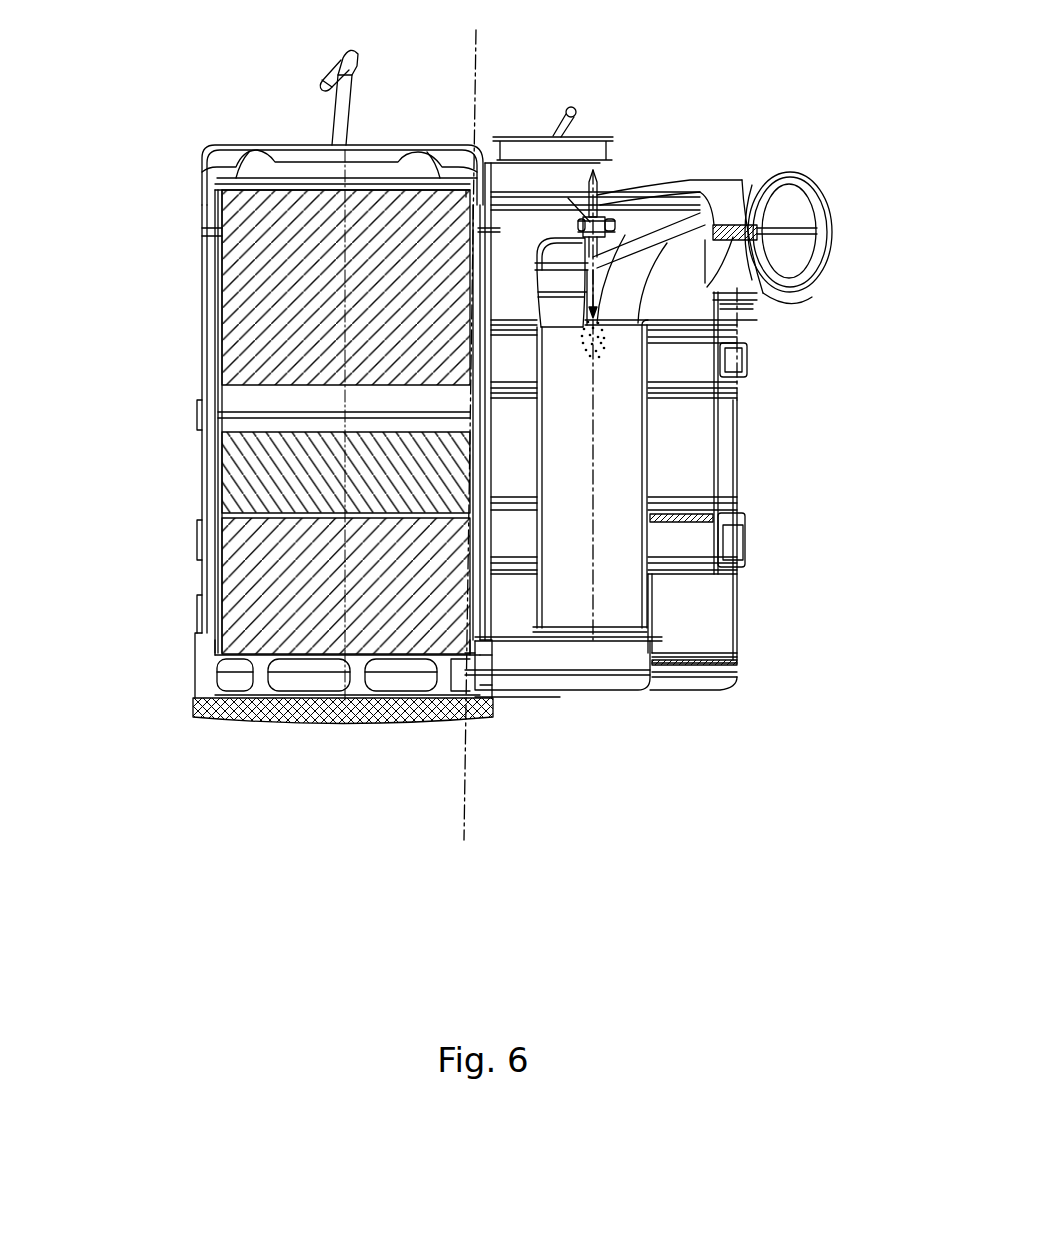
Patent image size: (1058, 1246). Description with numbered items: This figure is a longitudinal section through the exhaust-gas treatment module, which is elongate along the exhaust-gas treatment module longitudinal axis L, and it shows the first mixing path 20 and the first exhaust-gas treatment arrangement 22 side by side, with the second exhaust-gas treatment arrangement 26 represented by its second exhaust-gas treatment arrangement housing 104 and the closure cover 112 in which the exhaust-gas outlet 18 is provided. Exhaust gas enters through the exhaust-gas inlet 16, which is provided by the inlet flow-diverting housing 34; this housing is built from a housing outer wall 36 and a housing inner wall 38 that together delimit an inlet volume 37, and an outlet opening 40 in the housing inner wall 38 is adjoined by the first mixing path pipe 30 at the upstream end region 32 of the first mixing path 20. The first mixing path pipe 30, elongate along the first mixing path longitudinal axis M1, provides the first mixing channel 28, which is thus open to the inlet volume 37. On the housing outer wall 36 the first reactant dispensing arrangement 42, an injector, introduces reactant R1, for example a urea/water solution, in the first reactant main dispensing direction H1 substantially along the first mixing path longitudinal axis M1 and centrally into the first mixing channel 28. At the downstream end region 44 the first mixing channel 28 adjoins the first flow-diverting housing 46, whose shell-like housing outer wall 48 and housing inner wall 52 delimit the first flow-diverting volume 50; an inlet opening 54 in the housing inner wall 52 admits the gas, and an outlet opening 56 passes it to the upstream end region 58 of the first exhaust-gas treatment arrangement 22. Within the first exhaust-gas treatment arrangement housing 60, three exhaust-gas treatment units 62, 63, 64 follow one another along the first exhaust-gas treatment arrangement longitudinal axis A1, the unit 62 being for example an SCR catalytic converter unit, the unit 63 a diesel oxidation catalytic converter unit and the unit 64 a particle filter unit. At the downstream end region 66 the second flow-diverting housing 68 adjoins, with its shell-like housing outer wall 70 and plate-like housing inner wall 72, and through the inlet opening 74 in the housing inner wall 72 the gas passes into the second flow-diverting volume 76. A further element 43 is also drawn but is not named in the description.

The exhaust-gas inlet 16 is at (817, 205).
The exhaust-gas outlet 18 is at (515, 133).
The first mixing path 20 is at (710, 422).
The first exhaust-gas treatment arrangement 22 is at (267, 427).
The second exhaust-gas treatment arrangement 26 is at (765, 667).
The first mixing channel 28 is at (620, 543).
The first mixing path pipe 30 is at (648, 492).
The upstream end region 32 is at (603, 360).
The inlet flow-diverting housing 34 is at (714, 198).
The housing outer wall 36 is at (690, 190).
The inlet volume 37 is at (598, 290).
The housing inner wall 38 is at (717, 310).
The outlet opening 40 is at (747, 345).
The first reactant dispensing arrangement 42 is at (603, 217).
The bottom strip 43 is at (268, 722).
The downstream end region 44 is at (664, 606).
The first flow-diverting housing 46 is at (653, 687).
The housing outer wall 48 is at (547, 693).
The first flow-diverting volume 50 is at (462, 685).
The housing inner wall 52 is at (207, 627).
The inlet opening 54 is at (562, 625).
The outlet opening 56 is at (235, 668).
The upstream end region 58 is at (175, 601).
The first exhaust-gas treatment arrangement housing 60 is at (213, 410).
The exhaust-gas treatment unit 62 is at (240, 547).
The exhaust-gas treatment unit 63 is at (253, 470).
The exhaust-gas treatment unit 64 is at (240, 260).
The downstream end region 66 is at (175, 233).
The second flow-diverting housing 68 is at (230, 143).
The housing outer wall 70 is at (306, 118).
The housing inner wall 72 is at (200, 227).
The inlet opening 74 is at (457, 190).
The second flow-diverting volume 76 is at (365, 158).
The second exhaust-gas treatment arrangement housing 104 is at (738, 628).
The closure cover 112 is at (605, 172).
The first exhaust-gas treatment arrangement longitudinal axis A1 is at (345, 300).
The first reactant main dispensing direction H1 is at (707, 297).
The reactant R1 is at (710, 395).
The first mixing path longitudinal axis M1 is at (592, 667).
The exhaust-gas treatment module longitudinal axis L is at (470, 822).